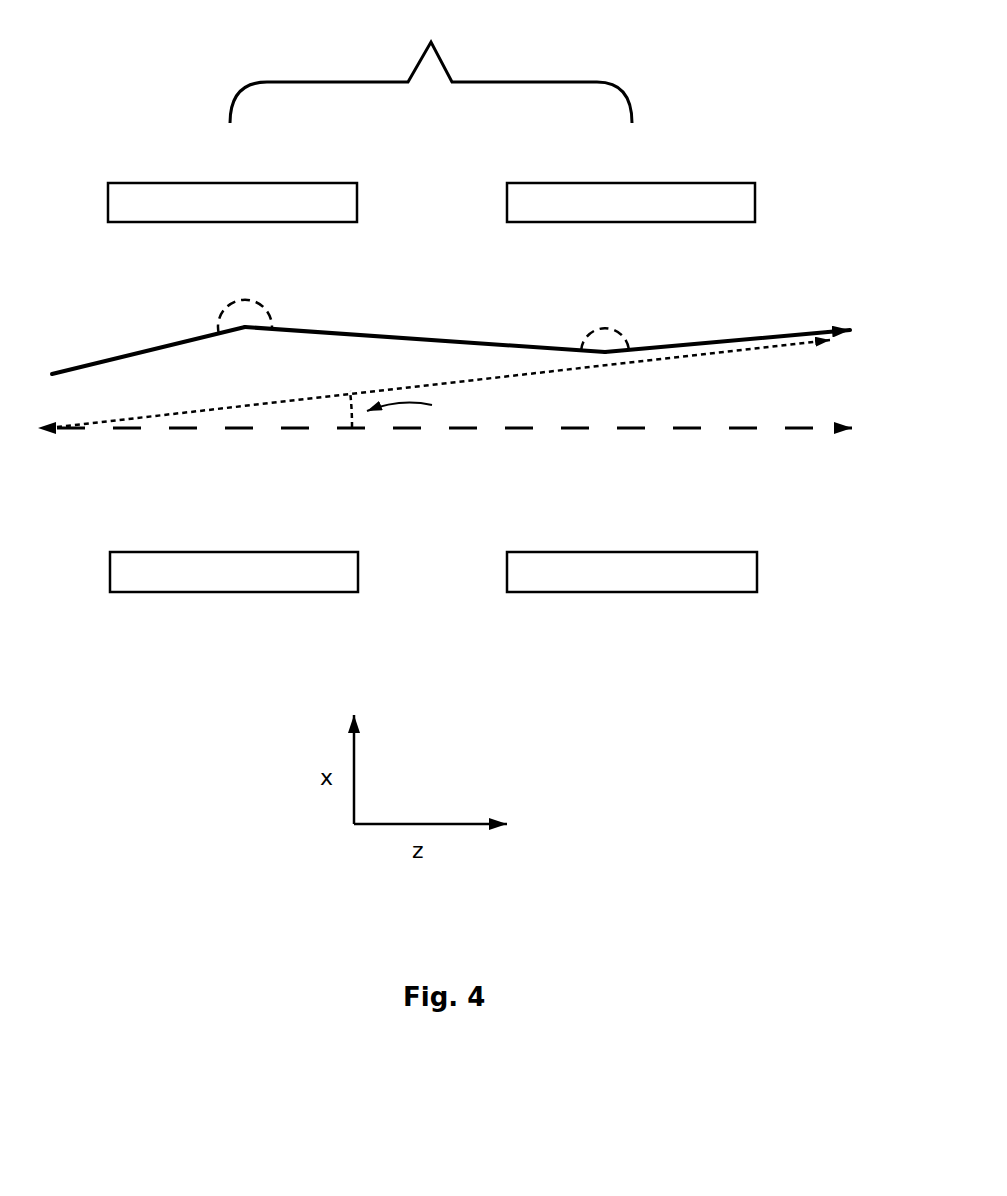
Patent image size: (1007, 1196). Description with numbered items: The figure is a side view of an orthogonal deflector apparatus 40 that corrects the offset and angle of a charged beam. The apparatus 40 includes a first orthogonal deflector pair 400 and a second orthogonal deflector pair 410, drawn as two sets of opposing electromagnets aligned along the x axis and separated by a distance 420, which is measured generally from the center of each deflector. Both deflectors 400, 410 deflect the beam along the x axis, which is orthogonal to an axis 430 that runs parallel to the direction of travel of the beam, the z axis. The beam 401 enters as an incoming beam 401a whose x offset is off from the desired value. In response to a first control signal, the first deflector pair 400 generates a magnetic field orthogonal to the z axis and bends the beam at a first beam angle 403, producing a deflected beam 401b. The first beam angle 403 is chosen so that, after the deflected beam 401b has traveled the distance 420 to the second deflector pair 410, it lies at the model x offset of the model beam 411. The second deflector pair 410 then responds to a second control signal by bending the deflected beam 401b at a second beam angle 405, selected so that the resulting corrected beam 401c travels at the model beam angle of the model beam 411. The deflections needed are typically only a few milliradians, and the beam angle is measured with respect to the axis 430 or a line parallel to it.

The orthogonal deflector apparatus 40 is at (142, 50).
The first orthogonal deflector pair 400 is at (183, 170).
The second orthogonal deflector pair 410 is at (597, 170).
The distance 420 is at (431, 70).
The beam 401 is at (451, 311).
The incoming beam 401a is at (128, 338).
The deflected beam 401b is at (373, 316).
The corrected beam 401c is at (728, 323).
The first beam angle 403 is at (232, 302).
The second beam angle 405 is at (595, 327).
The model beam 411 is at (253, 392).
The axis 430 is at (288, 437).